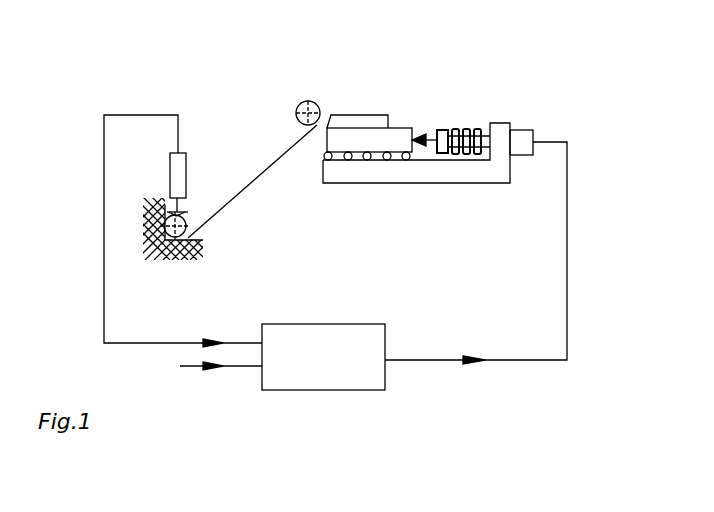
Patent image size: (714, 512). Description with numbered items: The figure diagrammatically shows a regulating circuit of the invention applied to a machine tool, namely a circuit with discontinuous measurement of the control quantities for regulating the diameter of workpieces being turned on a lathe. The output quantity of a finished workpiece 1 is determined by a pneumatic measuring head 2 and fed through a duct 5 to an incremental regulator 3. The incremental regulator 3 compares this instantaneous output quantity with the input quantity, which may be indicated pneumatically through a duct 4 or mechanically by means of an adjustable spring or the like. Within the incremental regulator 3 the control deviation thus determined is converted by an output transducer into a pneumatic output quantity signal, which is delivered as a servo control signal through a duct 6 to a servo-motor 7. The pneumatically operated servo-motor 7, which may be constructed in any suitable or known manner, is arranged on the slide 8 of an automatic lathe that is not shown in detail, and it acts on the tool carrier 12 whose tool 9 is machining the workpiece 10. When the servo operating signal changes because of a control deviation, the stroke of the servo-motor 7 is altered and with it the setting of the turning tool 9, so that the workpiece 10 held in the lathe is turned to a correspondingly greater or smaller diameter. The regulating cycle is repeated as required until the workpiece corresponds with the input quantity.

The finished workpiece 1 is at (190, 213).
The pneumatic measuring head 2 is at (175, 157).
The incremental regulator 3 is at (324, 375).
The duct 4 is at (237, 367).
The duct 5 is at (118, 343).
The duct 6 is at (455, 361).
The servo-motor 7 is at (466, 142).
The slide 8 is at (442, 173).
The tool 9 is at (355, 127).
The workpiece 10 is at (315, 101).
The tool carrier 12 is at (392, 152).